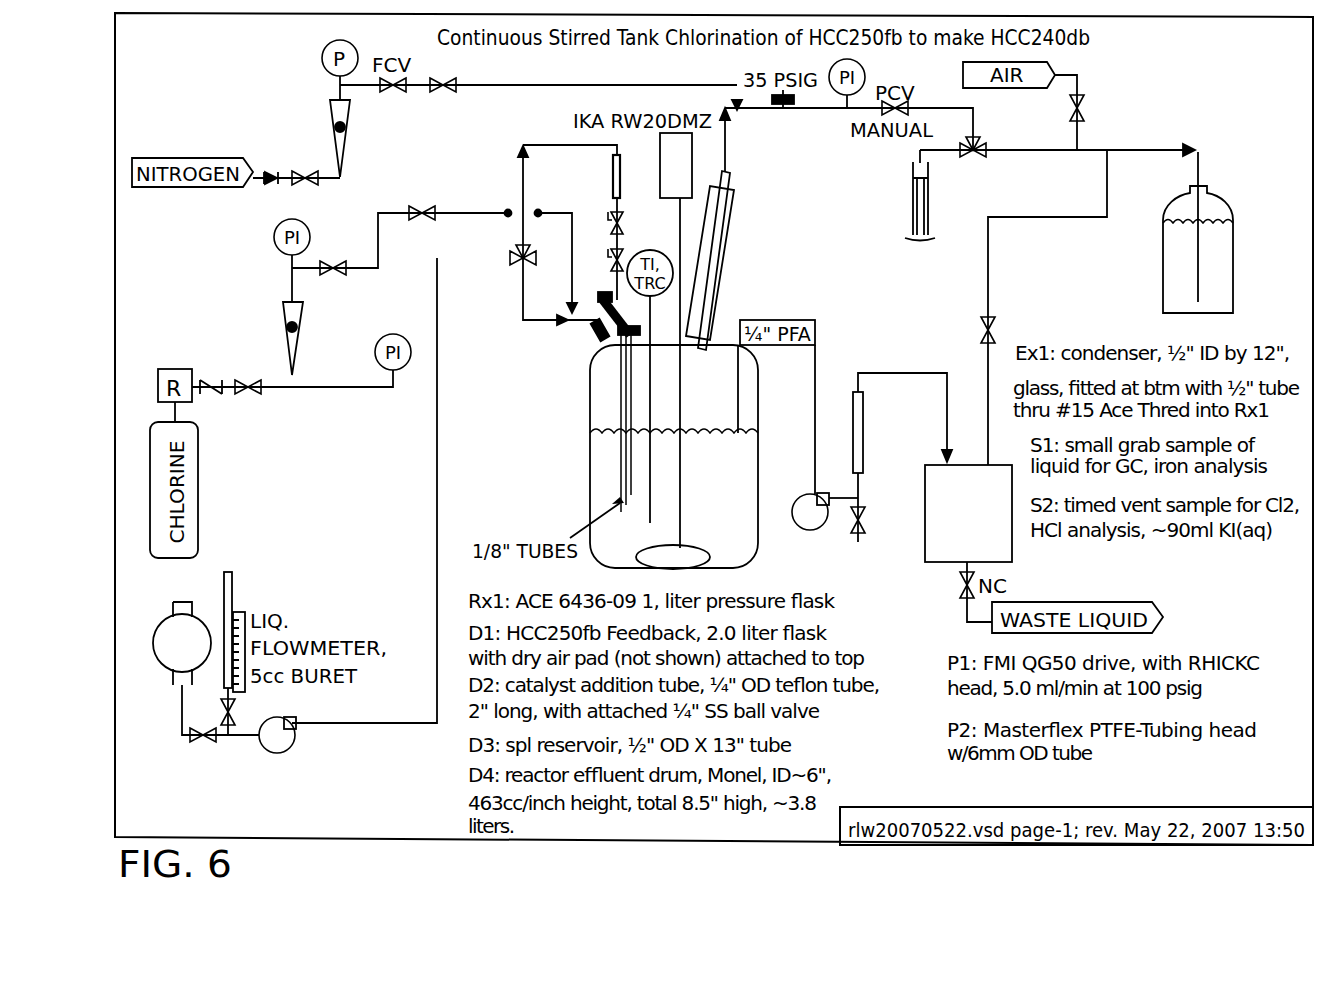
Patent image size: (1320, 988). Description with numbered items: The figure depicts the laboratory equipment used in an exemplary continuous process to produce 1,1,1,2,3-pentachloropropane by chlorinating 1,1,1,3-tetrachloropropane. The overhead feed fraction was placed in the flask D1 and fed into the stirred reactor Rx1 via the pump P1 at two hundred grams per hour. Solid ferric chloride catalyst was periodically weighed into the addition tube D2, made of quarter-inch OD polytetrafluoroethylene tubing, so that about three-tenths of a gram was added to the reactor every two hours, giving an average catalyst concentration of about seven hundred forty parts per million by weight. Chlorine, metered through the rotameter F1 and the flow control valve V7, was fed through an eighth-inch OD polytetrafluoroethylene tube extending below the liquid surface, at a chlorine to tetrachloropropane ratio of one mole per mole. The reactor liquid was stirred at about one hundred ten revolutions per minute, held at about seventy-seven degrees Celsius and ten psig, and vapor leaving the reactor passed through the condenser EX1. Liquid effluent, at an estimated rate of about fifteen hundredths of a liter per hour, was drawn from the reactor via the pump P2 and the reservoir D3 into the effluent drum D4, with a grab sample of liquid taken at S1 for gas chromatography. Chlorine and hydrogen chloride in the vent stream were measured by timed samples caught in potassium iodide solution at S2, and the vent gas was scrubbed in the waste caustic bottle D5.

The feed flask D1 is at (182, 643).
The catalyst addition tube D2 is at (630, 227).
The sample reservoir tube D3 is at (902, 457).
The reactor effluent drum D4 is at (968, 513).
The waste NaOH scrubber bottle D5 is at (1142, 249).
The pressure flask reactor Rx1 is at (674, 457).
The condenser EX1 is at (735, 229).
The chlorine rotameter F1 is at (306, 338).
The pump P1 is at (277, 735).
The Masterflex tubing pump P2 is at (810, 511).
The liquid grab sample valve S1 is at (857, 540).
The timed vent sample tube S2 is at (920, 209).
The flow control valve V7 is at (337, 244).